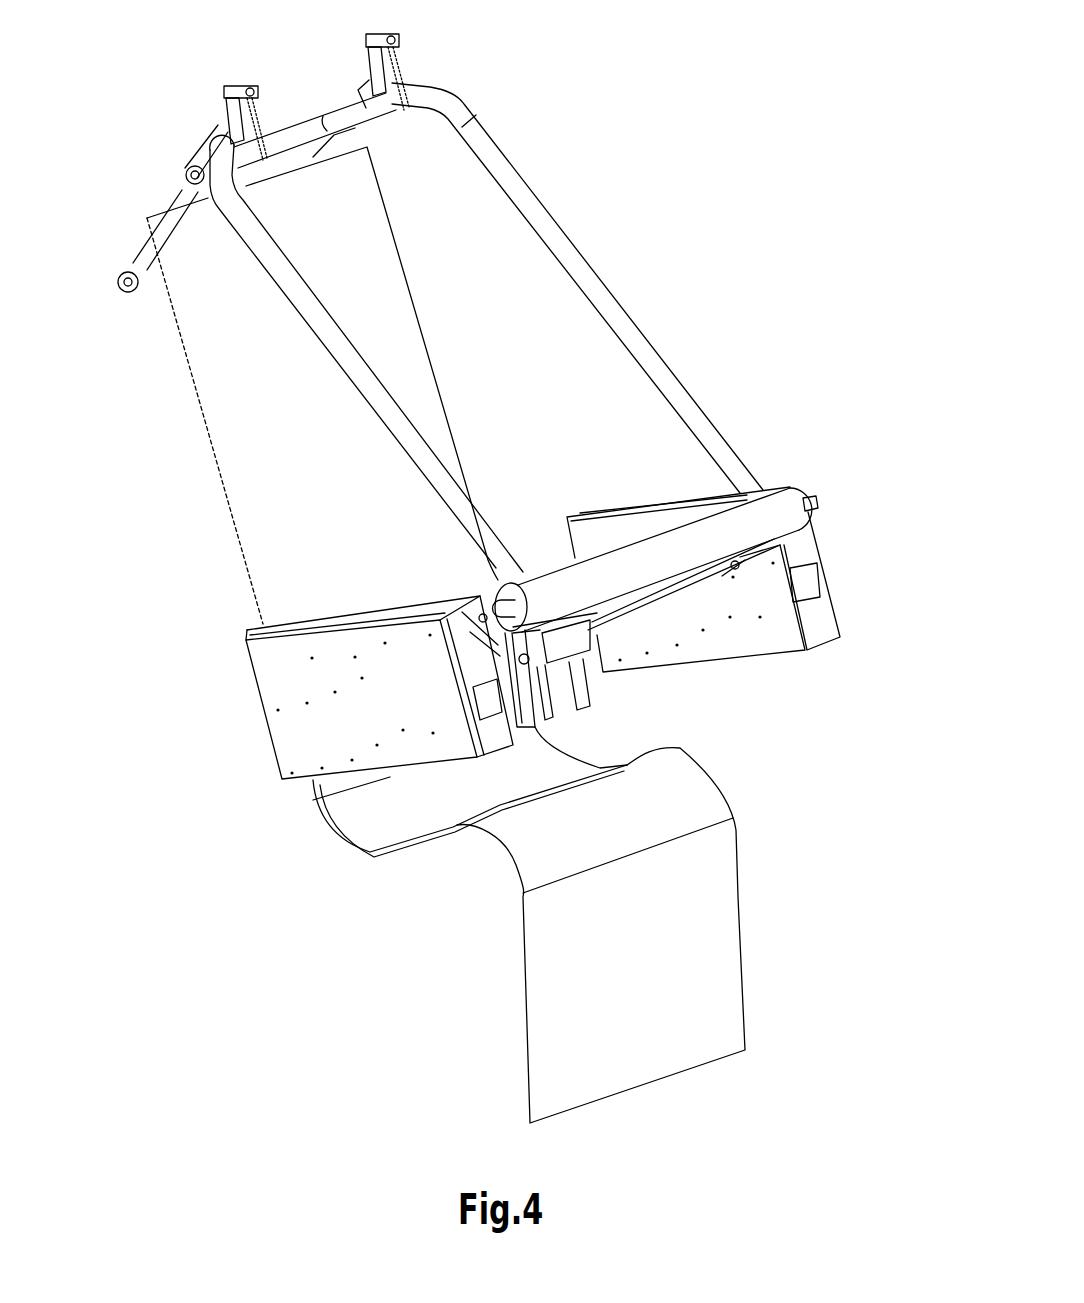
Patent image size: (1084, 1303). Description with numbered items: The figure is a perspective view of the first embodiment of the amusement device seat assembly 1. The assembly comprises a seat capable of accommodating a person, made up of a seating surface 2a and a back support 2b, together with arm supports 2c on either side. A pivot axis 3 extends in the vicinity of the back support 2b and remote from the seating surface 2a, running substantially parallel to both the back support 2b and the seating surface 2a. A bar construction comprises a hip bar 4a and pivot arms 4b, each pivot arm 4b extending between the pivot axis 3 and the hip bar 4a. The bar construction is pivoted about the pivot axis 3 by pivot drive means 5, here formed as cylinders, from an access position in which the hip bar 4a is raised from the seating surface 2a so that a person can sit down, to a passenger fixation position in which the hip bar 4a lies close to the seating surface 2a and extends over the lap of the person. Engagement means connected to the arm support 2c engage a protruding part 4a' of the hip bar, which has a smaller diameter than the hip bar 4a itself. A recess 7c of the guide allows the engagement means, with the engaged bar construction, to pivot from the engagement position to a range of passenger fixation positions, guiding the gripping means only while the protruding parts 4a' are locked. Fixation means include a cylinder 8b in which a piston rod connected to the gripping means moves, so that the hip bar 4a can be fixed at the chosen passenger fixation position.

The amusement device seat assembly 1 is at (690, 213).
The pivot axis 3 is at (294, 133).
The pivot drive means 5 is at (364, 78).
The hip bar 4a is at (653, 560).
The protruding part of the hip bar 4a' is at (653, 540).
The pivot arm 4b is at (597, 288).
The seating surface 2a is at (622, 778).
The back support 2b is at (322, 376).
The arm support 2c is at (543, 645).
The recess 7c is at (713, 589).
The cylinder 8b is at (555, 666).